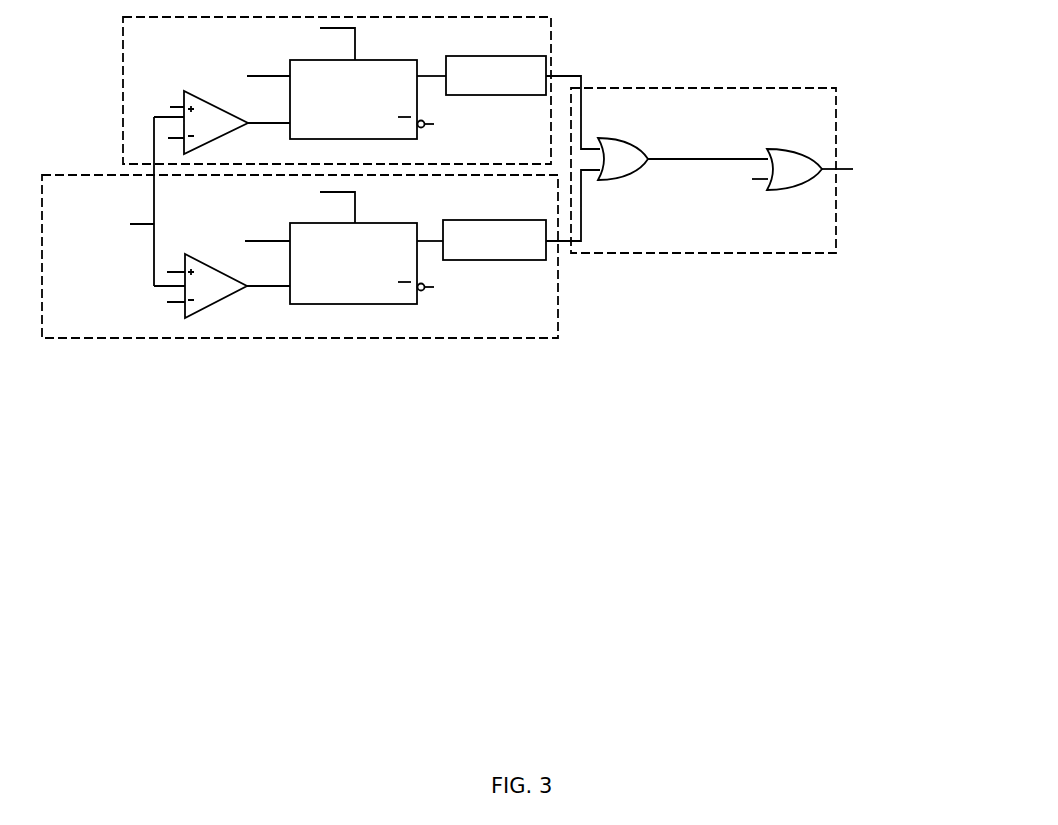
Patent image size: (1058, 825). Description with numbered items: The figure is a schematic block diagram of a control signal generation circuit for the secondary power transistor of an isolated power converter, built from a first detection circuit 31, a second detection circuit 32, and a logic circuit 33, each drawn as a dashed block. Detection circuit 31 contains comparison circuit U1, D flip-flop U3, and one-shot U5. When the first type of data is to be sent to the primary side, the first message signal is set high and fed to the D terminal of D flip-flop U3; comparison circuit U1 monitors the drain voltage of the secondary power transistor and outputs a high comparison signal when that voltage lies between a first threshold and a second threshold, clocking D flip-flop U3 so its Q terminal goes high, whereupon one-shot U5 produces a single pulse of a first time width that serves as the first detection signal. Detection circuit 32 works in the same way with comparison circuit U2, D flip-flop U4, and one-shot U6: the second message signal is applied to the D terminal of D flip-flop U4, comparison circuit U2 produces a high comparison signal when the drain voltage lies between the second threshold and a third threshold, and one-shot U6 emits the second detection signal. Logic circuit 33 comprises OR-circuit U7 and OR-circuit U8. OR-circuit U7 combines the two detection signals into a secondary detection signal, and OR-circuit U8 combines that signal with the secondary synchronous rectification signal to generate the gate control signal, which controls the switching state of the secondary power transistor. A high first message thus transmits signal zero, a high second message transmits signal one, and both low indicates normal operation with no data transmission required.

The detection circuit 31 is at (552, 33).
The detection circuit 32 is at (545, 330).
The logic circuit 33 is at (825, 245).
The comparison circuit U1 is at (222, 124).
The comparison circuit U2 is at (228, 298).
The D flip-flop U3 is at (314, 89).
The D flip-flop U4 is at (370, 278).
The one-shot U5 is at (496, 87).
The one-shot U6 is at (494, 254).
The OR-circuit U7 is at (630, 168).
The OR-circuit U8 is at (797, 178).